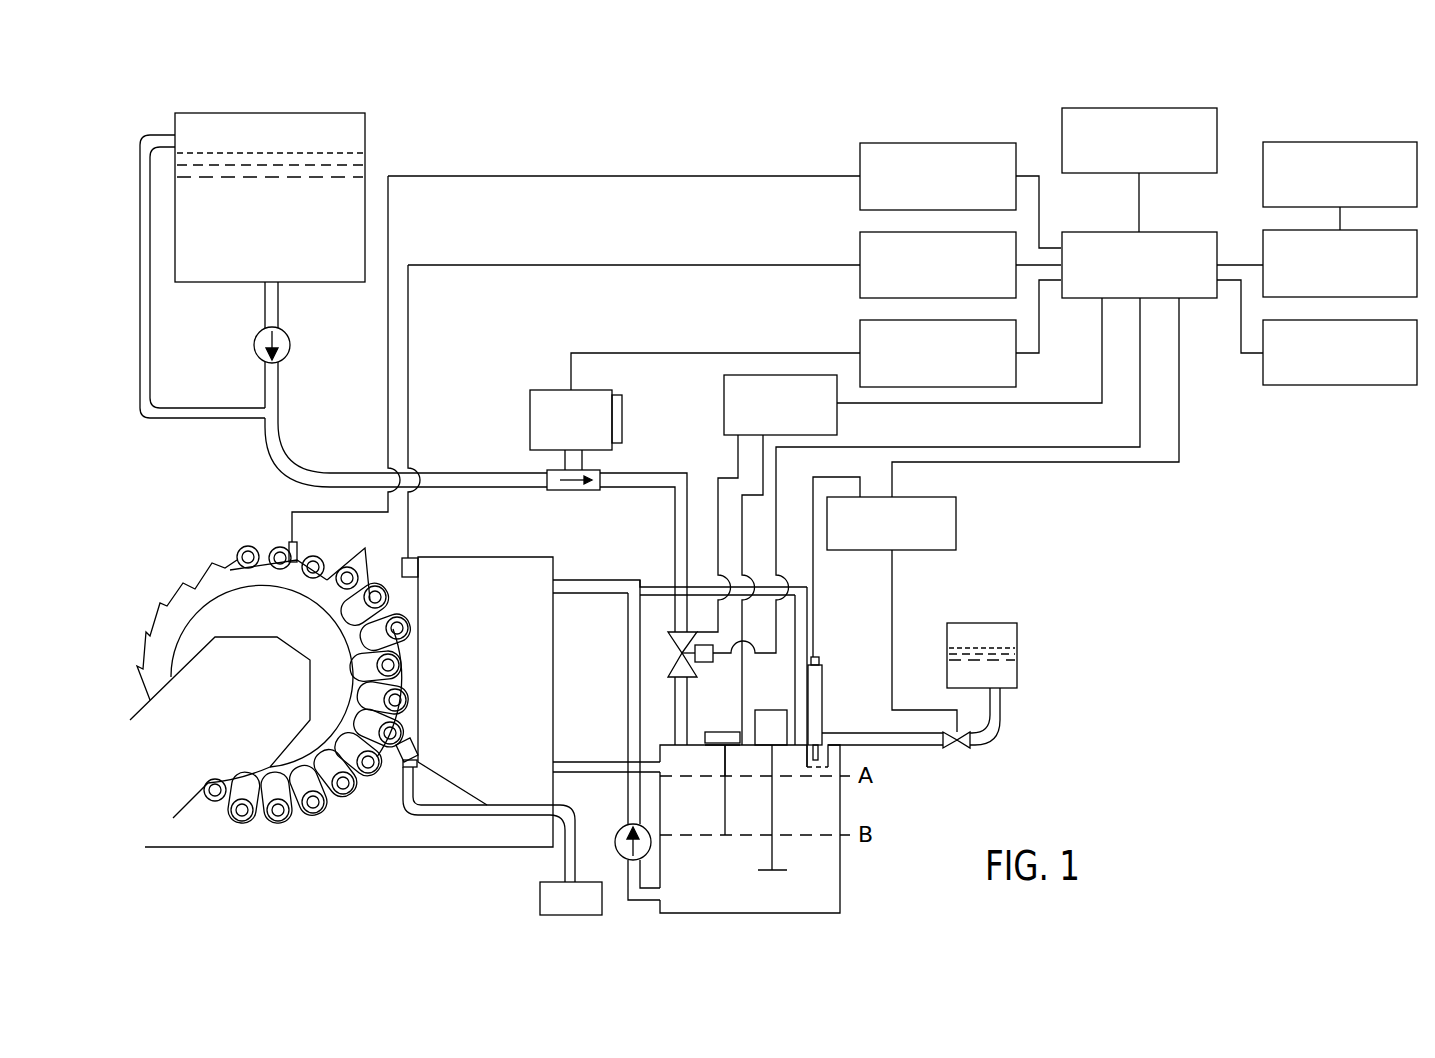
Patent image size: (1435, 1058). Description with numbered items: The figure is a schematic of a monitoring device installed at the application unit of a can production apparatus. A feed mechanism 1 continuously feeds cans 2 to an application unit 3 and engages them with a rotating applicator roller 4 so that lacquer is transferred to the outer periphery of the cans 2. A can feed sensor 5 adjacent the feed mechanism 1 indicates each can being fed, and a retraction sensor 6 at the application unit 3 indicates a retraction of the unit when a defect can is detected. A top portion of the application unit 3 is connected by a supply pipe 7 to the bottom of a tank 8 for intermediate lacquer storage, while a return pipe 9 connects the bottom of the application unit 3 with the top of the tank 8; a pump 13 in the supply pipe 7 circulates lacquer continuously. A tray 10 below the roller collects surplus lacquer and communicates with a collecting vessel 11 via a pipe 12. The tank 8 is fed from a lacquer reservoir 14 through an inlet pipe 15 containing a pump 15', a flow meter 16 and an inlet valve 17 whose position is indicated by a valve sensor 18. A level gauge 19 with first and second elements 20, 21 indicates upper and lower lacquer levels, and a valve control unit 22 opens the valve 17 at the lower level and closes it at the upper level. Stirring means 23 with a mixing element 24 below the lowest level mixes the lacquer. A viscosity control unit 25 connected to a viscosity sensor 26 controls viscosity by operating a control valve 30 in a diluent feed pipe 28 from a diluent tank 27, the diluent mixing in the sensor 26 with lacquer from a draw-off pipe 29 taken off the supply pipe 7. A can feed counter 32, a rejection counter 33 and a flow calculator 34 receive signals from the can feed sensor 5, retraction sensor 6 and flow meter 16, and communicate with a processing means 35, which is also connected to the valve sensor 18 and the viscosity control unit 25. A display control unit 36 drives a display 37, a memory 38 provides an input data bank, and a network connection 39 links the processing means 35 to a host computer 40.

The feed mechanism 1 is at (230, 555).
The cans 2 is at (320, 675).
The application unit 3 is at (503, 675).
The applicator roller 4 is at (407, 670).
The can feed sensor 5 is at (297, 547).
The retraction sensor 6 is at (413, 568).
The supply pipe 7 is at (597, 587).
The tank 8 is at (830, 875).
The return pipe 9 is at (597, 760).
The tray 10 is at (397, 777).
The collecting vessel 11 is at (550, 894).
The pipe 12 is at (568, 820).
The pump 13 is at (616, 845).
The lacquer reservoir 14 is at (213, 263).
The inlet pipe 15 is at (643, 586).
The pump 15' is at (300, 338).
The flow meter 16 is at (620, 407).
The inlet valve 17 is at (672, 670).
The valve sensor 18 is at (705, 662).
The level gauge 19 is at (715, 732).
The first element 20 is at (723, 807).
The second element 21 is at (732, 758).
The valve control unit 22 is at (730, 388).
The stirring means 23 is at (771, 708).
The mixing element 24 is at (778, 872).
The viscosity control unit 25 is at (945, 538).
The viscosity sensor 26 is at (817, 677).
The tank 27 is at (1017, 635).
The diluent feed pipe 28 is at (998, 723).
The draw-off pipe 29 is at (797, 610).
The control valve 30 is at (957, 748).
The can feed counter 32 is at (868, 153).
The rejection counter 33 is at (868, 243).
The flow calculator 34 is at (872, 333).
The processing means 35 is at (1178, 232).
The display control unit 36 is at (1278, 237).
The display 37 is at (1338, 142).
The memory 38 is at (1208, 118).
The network connection 39 is at (1240, 330).
The host computer 40 is at (1287, 375).